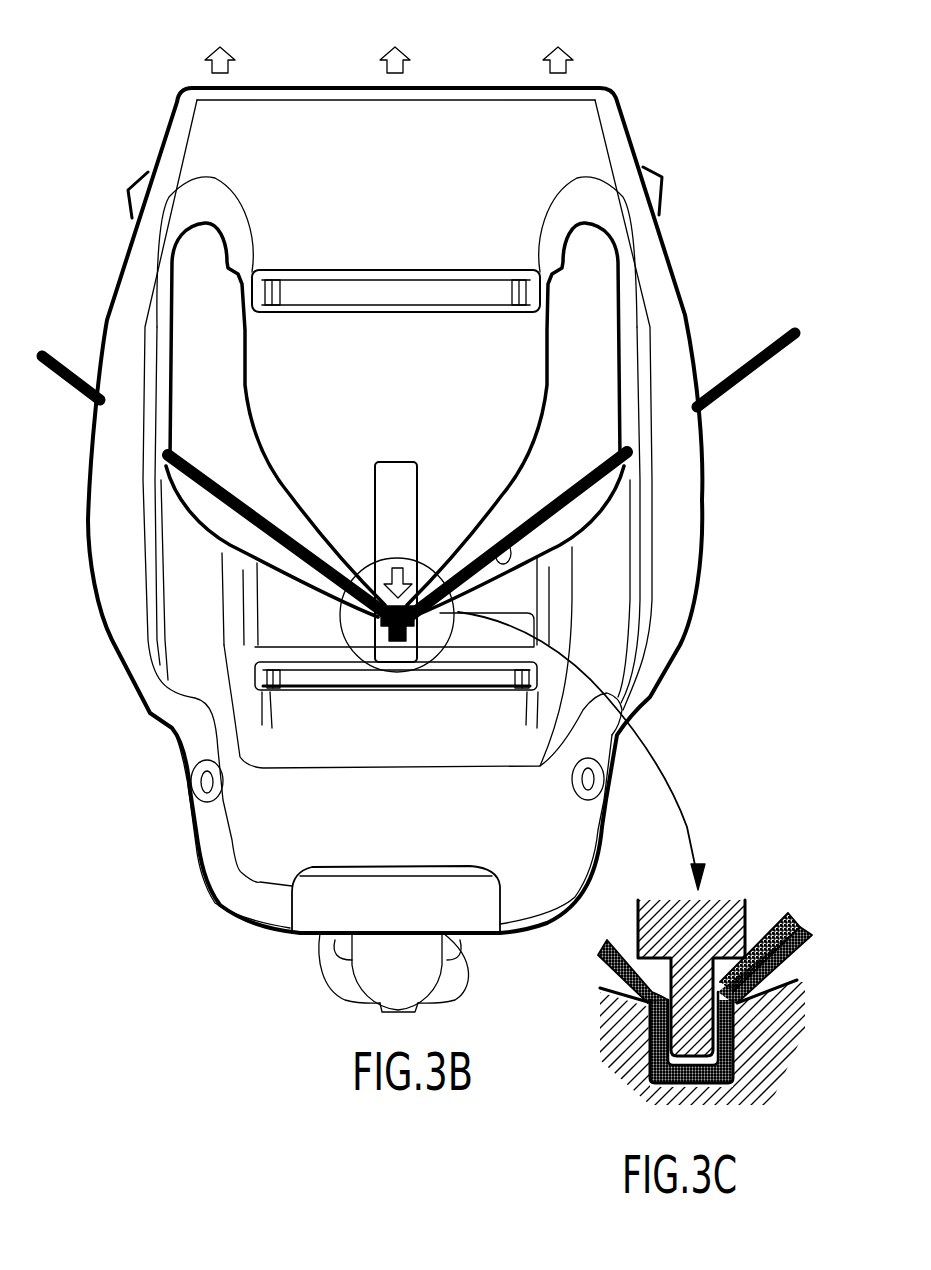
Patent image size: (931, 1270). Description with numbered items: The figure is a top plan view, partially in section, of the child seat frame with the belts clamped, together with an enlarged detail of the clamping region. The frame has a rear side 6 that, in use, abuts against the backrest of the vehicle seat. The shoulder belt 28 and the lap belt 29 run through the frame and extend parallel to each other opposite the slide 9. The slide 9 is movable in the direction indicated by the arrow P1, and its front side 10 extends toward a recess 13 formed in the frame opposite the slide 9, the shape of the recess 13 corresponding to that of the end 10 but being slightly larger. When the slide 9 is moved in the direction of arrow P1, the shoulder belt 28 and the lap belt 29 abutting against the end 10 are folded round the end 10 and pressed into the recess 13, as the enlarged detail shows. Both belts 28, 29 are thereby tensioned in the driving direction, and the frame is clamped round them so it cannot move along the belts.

In FIG. 3B, the rear side 6 is at (471, 85).
In FIG. 3B, the shoulder belt 28 is at (733, 372).
In FIG. 3C, the shoulder belt 28 is at (707, 1083).
In FIG. 3B, the lap belt 29 is at (760, 362).
In FIG. 3C, the lap belt 29 is at (682, 1083).
In FIG. 3B, the arrow indicating slide movement direction P1 is at (392, 570).
In FIG. 3C, the slide 9 is at (712, 913).
In FIG. 3C, the recess 13 is at (650, 1032).
In FIG. 3C, the front side of the slide 10 is at (683, 1042).